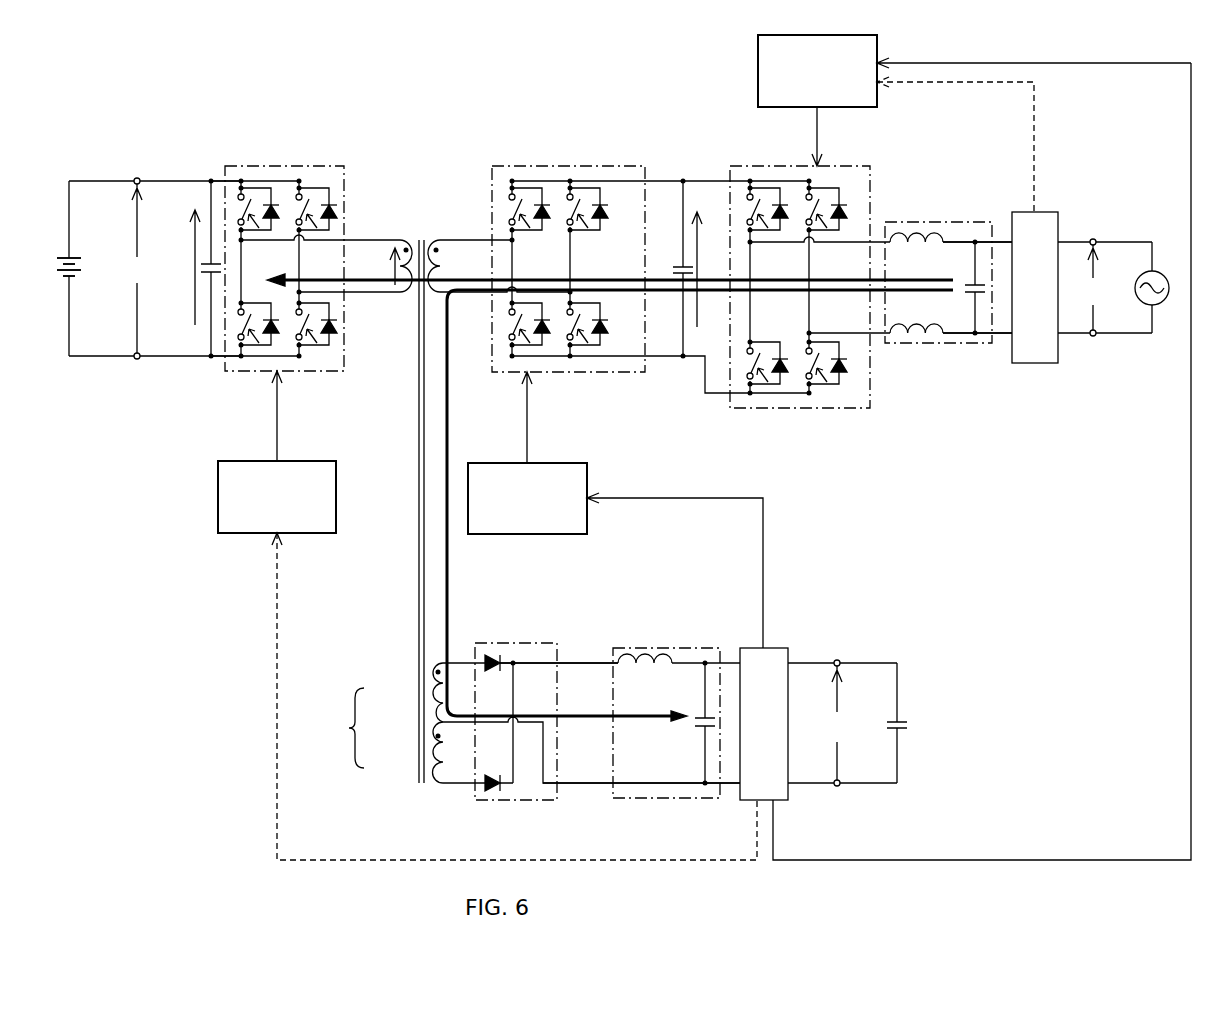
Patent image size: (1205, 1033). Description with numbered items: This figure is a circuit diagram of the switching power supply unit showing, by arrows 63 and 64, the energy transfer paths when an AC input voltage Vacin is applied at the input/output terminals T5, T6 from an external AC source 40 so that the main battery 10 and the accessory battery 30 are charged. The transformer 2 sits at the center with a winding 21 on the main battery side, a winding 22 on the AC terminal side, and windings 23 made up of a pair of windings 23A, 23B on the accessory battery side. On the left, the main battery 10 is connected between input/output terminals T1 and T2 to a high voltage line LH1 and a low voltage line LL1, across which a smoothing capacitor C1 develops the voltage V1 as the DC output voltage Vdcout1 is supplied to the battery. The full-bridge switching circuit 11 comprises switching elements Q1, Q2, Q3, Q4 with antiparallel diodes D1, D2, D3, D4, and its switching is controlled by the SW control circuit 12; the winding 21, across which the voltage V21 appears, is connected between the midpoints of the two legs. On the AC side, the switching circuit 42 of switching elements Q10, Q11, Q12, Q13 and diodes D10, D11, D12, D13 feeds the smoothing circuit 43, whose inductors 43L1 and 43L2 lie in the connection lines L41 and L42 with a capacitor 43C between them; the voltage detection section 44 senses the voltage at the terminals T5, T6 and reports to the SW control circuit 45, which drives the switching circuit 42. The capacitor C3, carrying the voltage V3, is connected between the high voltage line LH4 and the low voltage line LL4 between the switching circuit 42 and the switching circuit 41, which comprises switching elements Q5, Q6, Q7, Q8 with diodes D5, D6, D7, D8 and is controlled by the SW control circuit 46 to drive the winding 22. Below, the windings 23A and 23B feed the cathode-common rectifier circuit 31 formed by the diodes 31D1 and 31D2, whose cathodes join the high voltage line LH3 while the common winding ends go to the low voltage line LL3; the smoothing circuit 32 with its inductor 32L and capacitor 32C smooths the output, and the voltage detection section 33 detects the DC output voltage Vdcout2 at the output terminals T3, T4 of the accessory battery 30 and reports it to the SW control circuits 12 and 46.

The transformer 2 is at (397, 445).
The main battery 10 is at (69, 258).
The switching circuit 11 is at (312, 243).
The SW control circuit 12 is at (308, 461).
The winding 21 is at (386, 233).
The winding 22 is at (458, 234).
The windings 23 is at (383, 723).
The winding 23A is at (437, 709).
The winding 23B is at (437, 758).
The accessory battery 30 is at (905, 722).
The rectifier circuit 31 is at (591, 711).
The diode 31D1 is at (494, 652).
The diode 31D2 is at (494, 798).
The smoothing circuit 32 is at (676, 689).
The inductor 32L is at (663, 650).
The capacitor 32C is at (702, 718).
The voltage detection section 33 is at (781, 648).
The AC power source 40 is at (1158, 270).
The switching circuit 41 is at (561, 244).
The switching circuit 42 is at (796, 313).
The smoothing circuit 43 is at (947, 271).
The inductor 43L1 is at (902, 222).
The inductor 43L2 is at (927, 343).
The capacitor 43C is at (973, 285).
The voltage detection section 44 is at (1048, 212).
The SW control circuit 45 is at (856, 35).
The SW control circuit 46 is at (540, 463).
The arrow 63 is at (376, 284).
The arrow 64 is at (449, 444).
The switching element Q1 is at (254, 238).
The switching element Q2 is at (256, 348).
The switching element Q3 is at (307, 192).
The switching element Q4 is at (313, 348).
The switching element Q5 is at (508, 192).
The switching element Q6 is at (519, 353).
The switching element Q7 is at (585, 231).
The switching element Q8 is at (577, 353).
The switching element Q10 is at (748, 192).
The switching element Q11 is at (755, 393).
The switching element Q12 is at (824, 231).
The switching element Q13 is at (814, 393).
The diode D1 is at (272, 205).
The diode D2 is at (272, 325).
The diode D3 is at (330, 205).
The diode D4 is at (330, 325).
The diode D5 is at (543, 205).
The diode D6 is at (543, 326).
The diode D7 is at (601, 205).
The diode D8 is at (601, 326).
The diode D10 is at (781, 205).
The diode D11 is at (781, 366).
The diode D12 is at (840, 205).
The diode D13 is at (840, 366).
The capacitor C1 is at (203, 264).
The capacitor C3 is at (680, 267).
The input/output terminal T1 is at (137, 178).
The input/output terminal T2 is at (137, 359).
The output terminal T3 is at (837, 660).
The output terminal T4 is at (837, 786).
The input/output terminal T5 is at (1093, 239).
The input/output terminal T6 is at (1093, 336).
The high voltage line LH1 is at (223, 180).
The low voltage line LL1 is at (223, 358).
The high voltage line LH3 is at (582, 662).
The low voltage line LL3 is at (588, 785).
The high voltage line LH4 is at (655, 180).
The low voltage line LL4 is at (673, 358).
The connection line L41 is at (1000, 241).
The connection line L42 is at (1001, 336).
The voltage V1 is at (181, 267).
The voltage V21 is at (376, 266).
The voltage V3 is at (710, 269).
The DC output voltage Vdcout1 is at (137, 268).
The DC output voltage Vdcout2 is at (838, 723).
The AC input voltage Vacin is at (1098, 287).